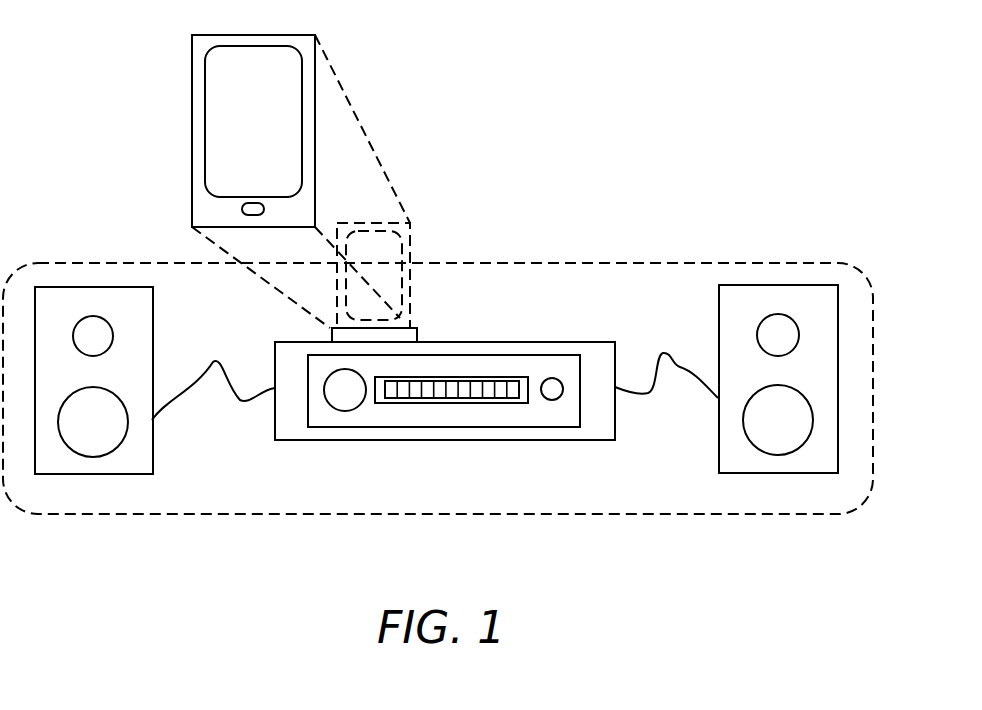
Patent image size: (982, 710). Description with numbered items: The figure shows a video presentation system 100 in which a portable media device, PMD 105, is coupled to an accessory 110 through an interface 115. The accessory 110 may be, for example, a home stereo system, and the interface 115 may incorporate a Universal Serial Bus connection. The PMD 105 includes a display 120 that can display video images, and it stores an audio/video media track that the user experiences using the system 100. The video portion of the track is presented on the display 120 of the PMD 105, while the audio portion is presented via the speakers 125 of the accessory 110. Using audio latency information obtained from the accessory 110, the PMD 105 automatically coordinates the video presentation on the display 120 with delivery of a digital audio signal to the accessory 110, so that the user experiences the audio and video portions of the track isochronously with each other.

The video presentation system 100 is at (763, 87).
The PMD 105 is at (256, 181).
The accessory 110 is at (635, 262).
The interface 115 is at (420, 332).
The display 120 is at (228, 132).
The speakers 125 is at (120, 470).